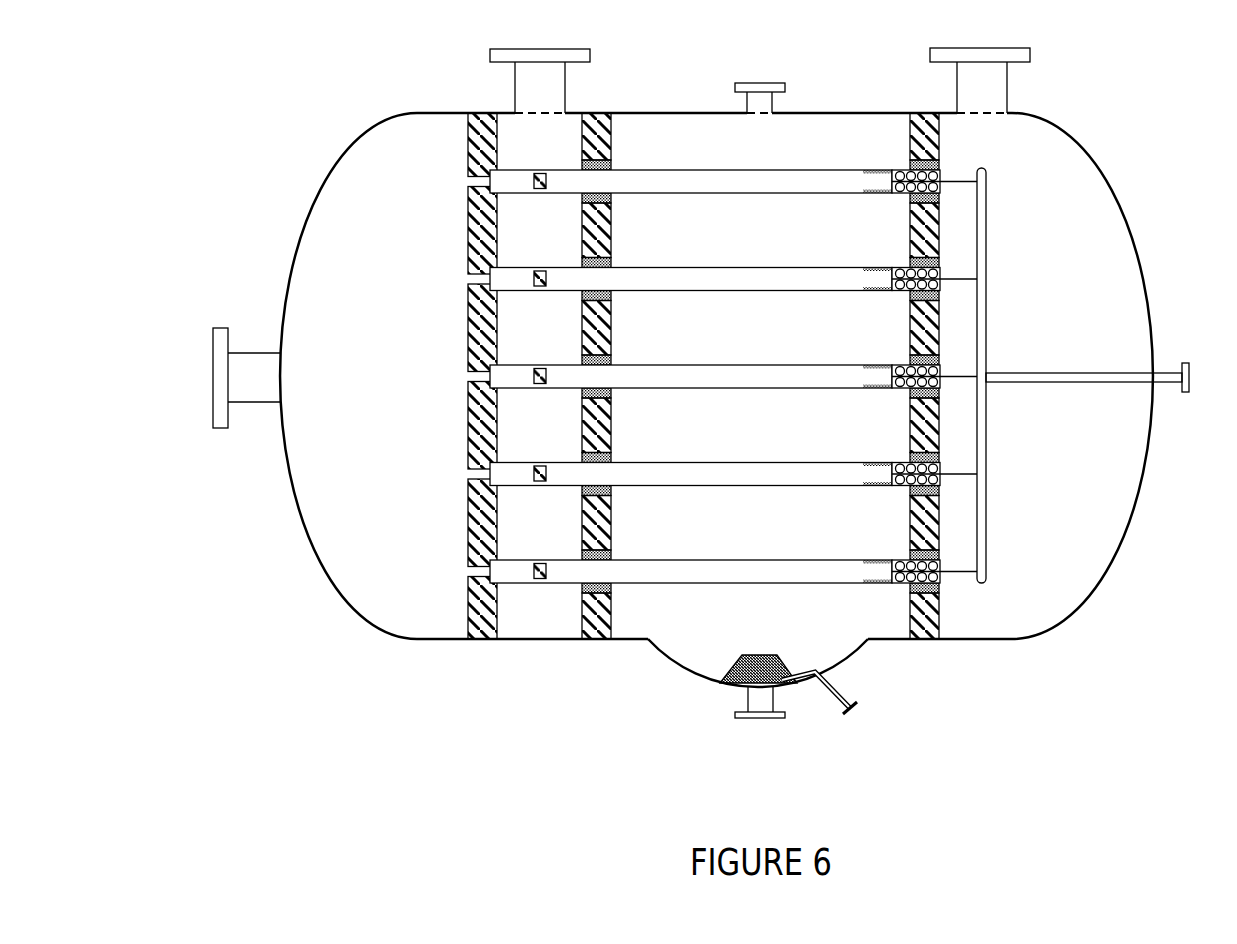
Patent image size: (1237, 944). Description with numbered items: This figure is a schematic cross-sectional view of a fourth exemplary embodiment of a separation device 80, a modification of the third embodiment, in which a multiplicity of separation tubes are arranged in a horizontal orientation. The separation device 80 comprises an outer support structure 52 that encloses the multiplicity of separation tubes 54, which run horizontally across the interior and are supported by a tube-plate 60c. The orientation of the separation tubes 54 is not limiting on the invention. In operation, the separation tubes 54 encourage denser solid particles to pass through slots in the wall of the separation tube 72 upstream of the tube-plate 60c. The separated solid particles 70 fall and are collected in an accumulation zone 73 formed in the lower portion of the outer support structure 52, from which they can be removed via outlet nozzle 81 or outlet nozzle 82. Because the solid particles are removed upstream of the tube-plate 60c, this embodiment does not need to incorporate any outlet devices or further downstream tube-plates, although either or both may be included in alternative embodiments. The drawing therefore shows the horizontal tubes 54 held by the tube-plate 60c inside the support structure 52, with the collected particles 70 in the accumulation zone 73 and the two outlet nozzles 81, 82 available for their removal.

The outer support structure 52 is at (866, 113).
The separation tubes 54 is at (685, 166).
The tube-plate 60c is at (916, 113).
The separated solid particles 70 is at (890, 587).
The wall of the separation tube 72 is at (890, 490).
The accumulation zone 73 is at (720, 681).
The separation device 80 is at (1108, 163).
The outlet nozzle 81 is at (858, 708).
The outlet nozzle 82 is at (787, 715).